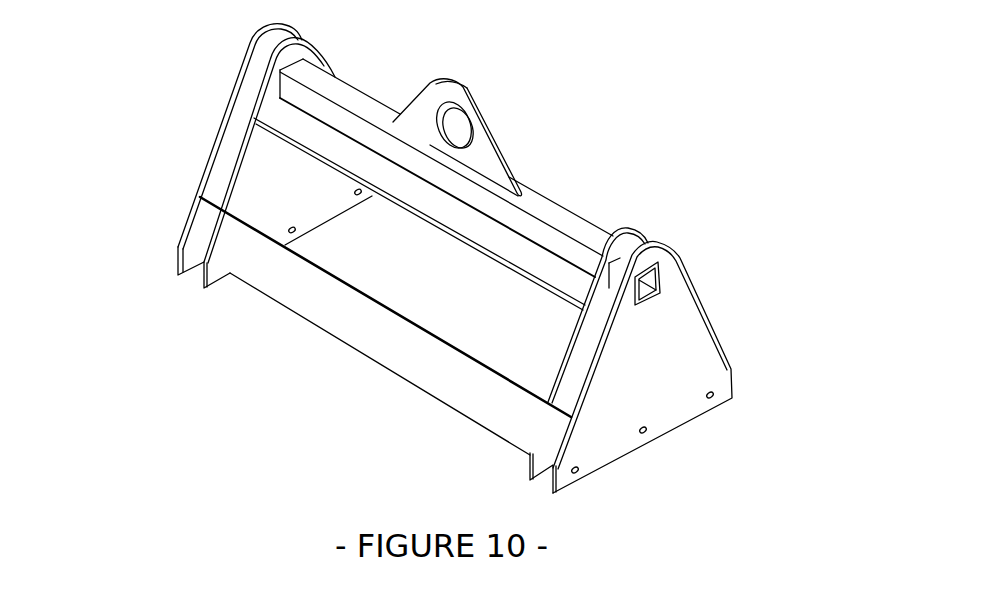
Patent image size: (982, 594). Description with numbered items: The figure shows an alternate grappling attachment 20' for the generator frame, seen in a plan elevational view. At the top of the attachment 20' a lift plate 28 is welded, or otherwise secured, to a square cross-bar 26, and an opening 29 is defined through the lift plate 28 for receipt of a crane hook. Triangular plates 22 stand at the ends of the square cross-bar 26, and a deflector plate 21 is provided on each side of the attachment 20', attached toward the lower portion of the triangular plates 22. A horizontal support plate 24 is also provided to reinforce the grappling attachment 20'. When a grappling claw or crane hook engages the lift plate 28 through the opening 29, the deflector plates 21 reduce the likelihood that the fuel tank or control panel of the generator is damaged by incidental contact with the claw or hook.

The grappling attachment feature 20' is at (446, 258).
The deflector plate 21 is at (215, 235).
The triangular plates 22 is at (290, 160).
The horizontal support plate 24 is at (560, 282).
The square cross-bar 26 is at (565, 217).
The lift plate 28 is at (483, 162).
The opening 29 is at (455, 120).